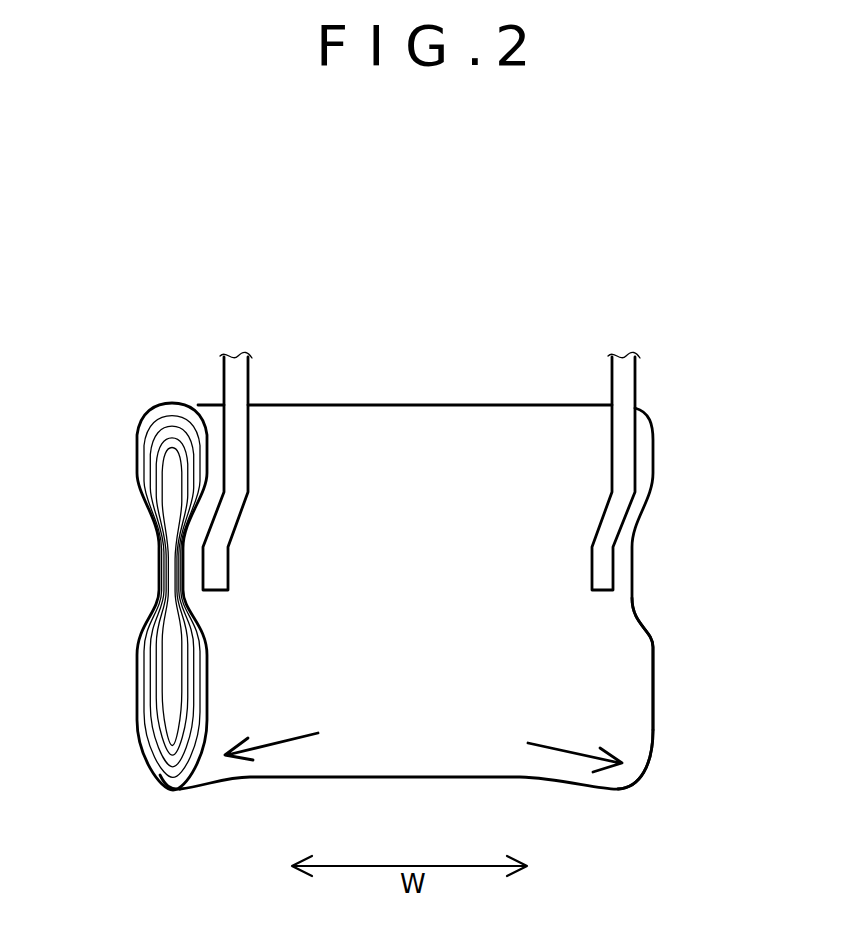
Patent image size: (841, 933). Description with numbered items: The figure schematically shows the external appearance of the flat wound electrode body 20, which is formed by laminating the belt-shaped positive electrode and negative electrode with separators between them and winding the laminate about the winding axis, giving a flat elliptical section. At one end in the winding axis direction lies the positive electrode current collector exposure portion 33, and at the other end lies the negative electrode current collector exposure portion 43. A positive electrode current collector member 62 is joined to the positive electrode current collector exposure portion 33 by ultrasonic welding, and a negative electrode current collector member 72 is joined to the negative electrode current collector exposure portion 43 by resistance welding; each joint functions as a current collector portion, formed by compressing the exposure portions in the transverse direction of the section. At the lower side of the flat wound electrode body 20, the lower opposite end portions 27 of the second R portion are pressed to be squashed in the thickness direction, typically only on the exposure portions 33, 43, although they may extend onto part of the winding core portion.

The flat wound electrode body 20 is at (412, 410).
The positive electrode current collector member 62 is at (235, 474).
The negative electrode current collector member 72 is at (622, 480).
The positive electrode current collector exposure portion 33 is at (222, 677).
The negative electrode current collector exposure portion 43 is at (628, 666).
The lower opposite end portions 27 is at (199, 779).